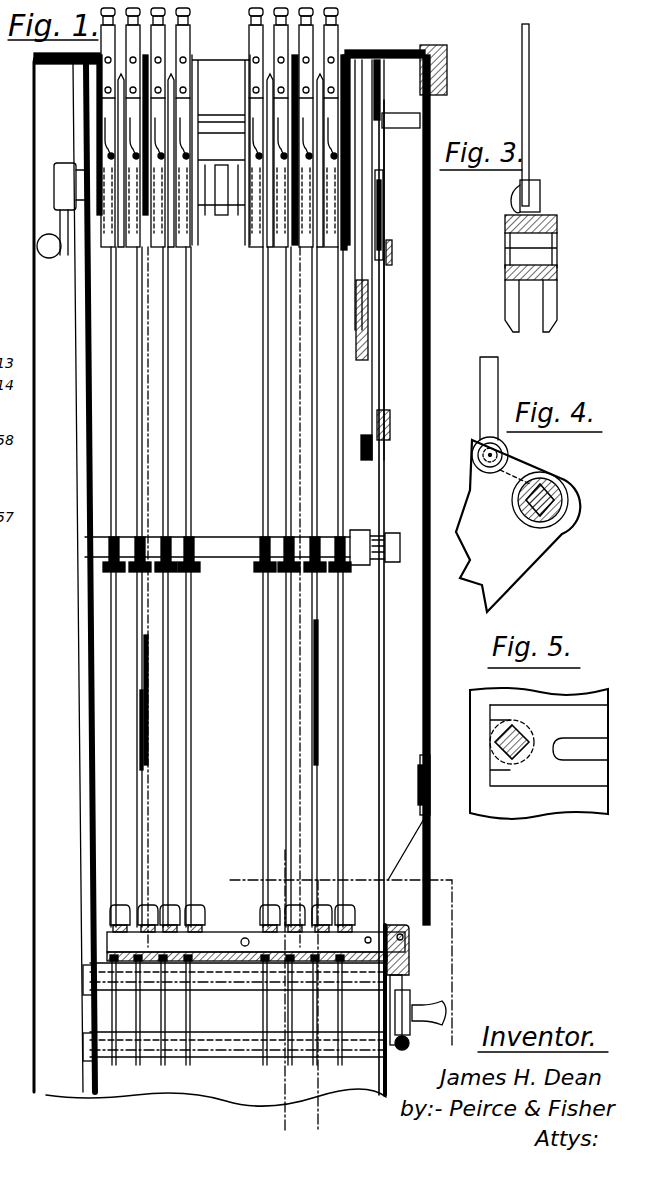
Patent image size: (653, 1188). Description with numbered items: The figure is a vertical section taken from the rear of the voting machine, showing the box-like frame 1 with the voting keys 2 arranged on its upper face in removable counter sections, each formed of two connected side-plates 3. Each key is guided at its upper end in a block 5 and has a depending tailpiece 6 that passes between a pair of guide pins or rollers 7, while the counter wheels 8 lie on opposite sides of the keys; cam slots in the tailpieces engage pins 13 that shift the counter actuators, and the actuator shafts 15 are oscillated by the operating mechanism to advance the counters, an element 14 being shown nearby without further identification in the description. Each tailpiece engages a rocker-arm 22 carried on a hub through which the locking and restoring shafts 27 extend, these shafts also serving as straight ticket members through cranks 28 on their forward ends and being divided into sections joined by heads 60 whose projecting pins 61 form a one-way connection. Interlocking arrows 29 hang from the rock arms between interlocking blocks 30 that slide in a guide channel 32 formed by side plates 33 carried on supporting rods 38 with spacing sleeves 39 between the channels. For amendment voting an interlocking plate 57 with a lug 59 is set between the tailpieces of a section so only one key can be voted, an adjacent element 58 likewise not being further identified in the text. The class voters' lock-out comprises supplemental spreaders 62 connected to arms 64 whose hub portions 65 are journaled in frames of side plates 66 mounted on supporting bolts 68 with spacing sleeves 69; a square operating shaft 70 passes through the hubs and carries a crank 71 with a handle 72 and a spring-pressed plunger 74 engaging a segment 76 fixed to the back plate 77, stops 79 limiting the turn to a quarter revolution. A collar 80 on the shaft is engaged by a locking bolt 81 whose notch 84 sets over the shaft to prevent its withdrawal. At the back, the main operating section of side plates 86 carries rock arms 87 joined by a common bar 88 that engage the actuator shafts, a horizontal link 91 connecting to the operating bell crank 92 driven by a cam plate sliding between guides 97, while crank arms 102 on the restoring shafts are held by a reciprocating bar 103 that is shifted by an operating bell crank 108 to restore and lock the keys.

In FIG. 1, the box-like frame 1 is at (208, 66).
In FIG. 1, the keys 2 is at (310, 26).
In FIG. 1, the side-plates 3 is at (265, 106).
In FIG. 1, the block 5 is at (294, 61).
In FIG. 1, the tailpiece 6 is at (260, 255).
In FIG. 1, the guide pins or rollers 7 is at (291, 1115).
In FIG. 1, the counter wheels 8 is at (310, 1107).
In FIG. 1, the pins 13 is at (258, 138).
In FIG. 1, the pin 14 is at (185, 156).
In FIG. 1, the actuator shafts 15 is at (412, 118).
In FIG. 1, the rocker-arm 22 is at (346, 164).
In FIG. 1, the locking and restoring shafts 27 is at (245, 218).
In FIG. 1, the straight ticket cranks or keys 28 is at (60, 219).
In FIG. 1, the interlocking straps or arrows 29 is at (143, 420).
In FIG. 1, the interlocking blocks 30 is at (285, 575).
In FIG. 1, the guide or channel 32 is at (335, 572).
In FIG. 1, the side plates 33 is at (340, 532).
In FIG. 1, the supporting rods 38 is at (375, 530).
In FIG. 1, the spacing sleeves 39 is at (270, 536).
In FIG. 1, the interlocking plate 57 is at (316, 262).
In FIG. 1, the rod 58 is at (285, 235).
In FIG. 1, the lug 59 is at (338, 260).
In FIG. 1, the heads 60 is at (217, 245).
In FIG. 1, the projecting pins 61 is at (220, 208).
In FIG. 1, the supplemental spreaders 62 is at (116, 802).
In FIG. 3, the supplemental spreaders 62 is at (528, 151).
In FIG. 4, the supplemental spreaders 62 is at (490, 378).
In FIG. 1, the arms 64 is at (355, 906).
In FIG. 3, the arms 64 is at (540, 190).
In FIG. 4, the arms 64 is at (487, 468).
In FIG. 1, the hub portion 65 is at (332, 978).
In FIG. 3, the hub portion 65 is at (542, 302).
In FIG. 4, the hub portion 65 is at (528, 508).
In FIG. 1, the side plates 66 is at (375, 1010).
In FIG. 3, the side plates 66 is at (514, 318).
In FIG. 1, the supporting bolts 68 is at (83, 1037).
In FIG. 4, the supporting bolts 68 is at (532, 552).
In FIG. 1, the spacing sleeves 69 is at (328, 1055).
In FIG. 1, the square operating shaft 70 is at (245, 934).
In FIG. 4, the square operating shaft 70 is at (554, 488).
In FIG. 5, the square operating shaft 70 is at (518, 726).
In FIG. 1, the crank 71 is at (403, 958).
In FIG. 1, the handle 72 is at (445, 1007).
In FIG. 1, the plunger 74 is at (408, 1006).
In FIG. 1, the segment 76 is at (400, 1050).
In FIG. 1, the back plate 77 is at (387, 1081).
In FIG. 5, the back plate 77 is at (537, 815).
In FIG. 1, the stops 79 is at (403, 993).
In FIG. 1, the collar 80 is at (355, 910).
In FIG. 1, the locking bolt 81 is at (383, 917).
In FIG. 5, the locking bolt 81 is at (578, 742).
In FIG. 5, the notch 84 is at (507, 773).
In FIG. 1, the side plates of main operating section 86 is at (366, 342).
In FIG. 1, the rock arms 87 is at (358, 108).
In FIG. 1, the common bar 88 is at (363, 88).
In FIG. 1, the horizontal link 91 is at (378, 463).
In FIG. 1, the shifter or operating bell crank 92 is at (368, 390).
In FIG. 1, the guides 97 is at (385, 411).
In FIG. 1, the crank arms 102 is at (363, 198).
In FIG. 1, the reciprocating bar 103 is at (376, 225).
In FIG. 1, the operating bell crank 108 is at (366, 292).